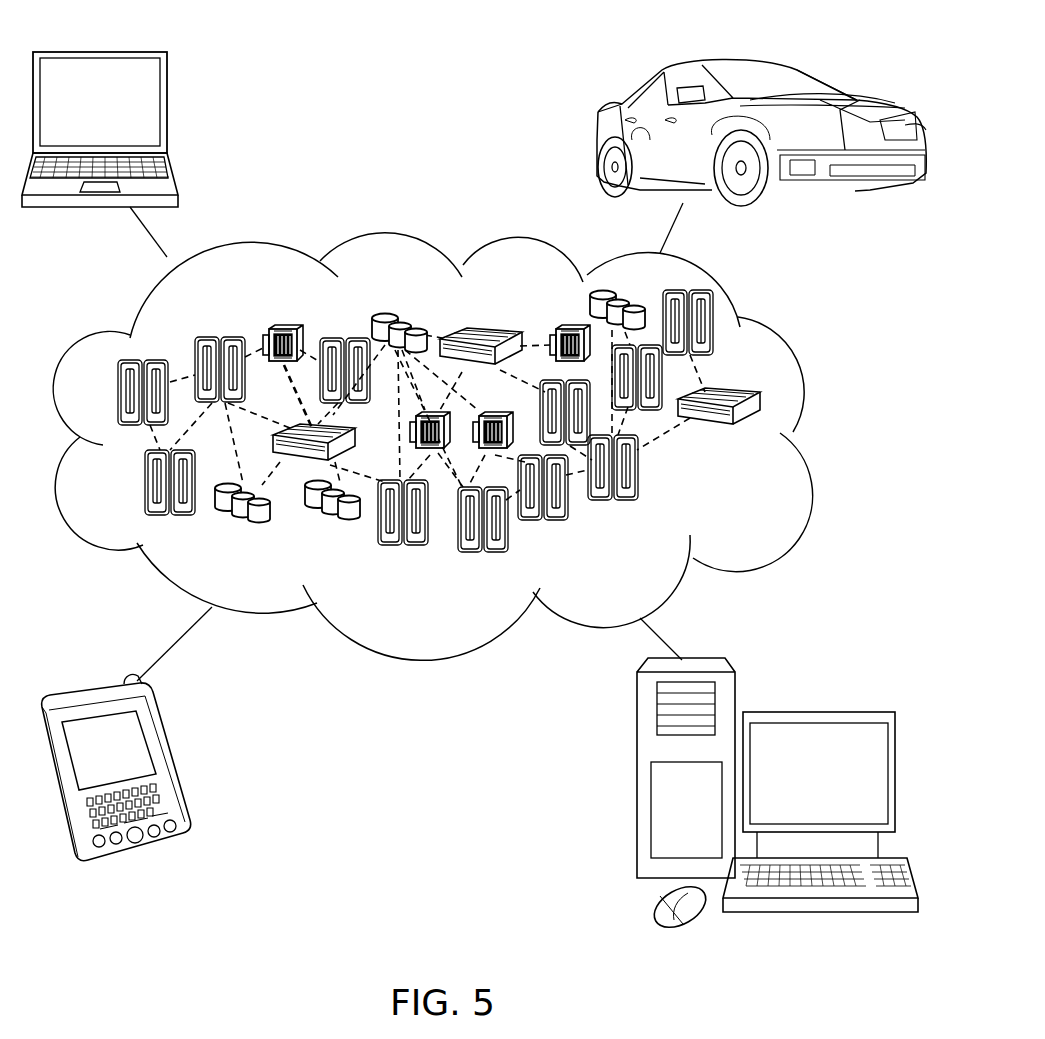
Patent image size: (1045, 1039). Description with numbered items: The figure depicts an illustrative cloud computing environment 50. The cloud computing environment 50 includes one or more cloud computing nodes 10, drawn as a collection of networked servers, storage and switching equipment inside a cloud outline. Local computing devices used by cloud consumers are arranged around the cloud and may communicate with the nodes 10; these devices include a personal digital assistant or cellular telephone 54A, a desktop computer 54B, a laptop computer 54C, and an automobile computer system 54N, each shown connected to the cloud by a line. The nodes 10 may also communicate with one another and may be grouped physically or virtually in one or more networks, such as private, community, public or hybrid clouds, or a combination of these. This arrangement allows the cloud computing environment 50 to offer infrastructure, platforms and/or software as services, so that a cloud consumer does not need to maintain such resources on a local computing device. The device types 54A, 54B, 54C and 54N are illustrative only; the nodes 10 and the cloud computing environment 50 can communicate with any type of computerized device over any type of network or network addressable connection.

The cloud computing nodes 10 is at (755, 492).
The cloud computing environment 50 is at (800, 360).
The personal digital assistant or cellular telephone 54A is at (175, 772).
The desktop computer 54B is at (812, 712).
The laptop computer 54C is at (170, 110).
The automobile computer system 54N is at (600, 122).